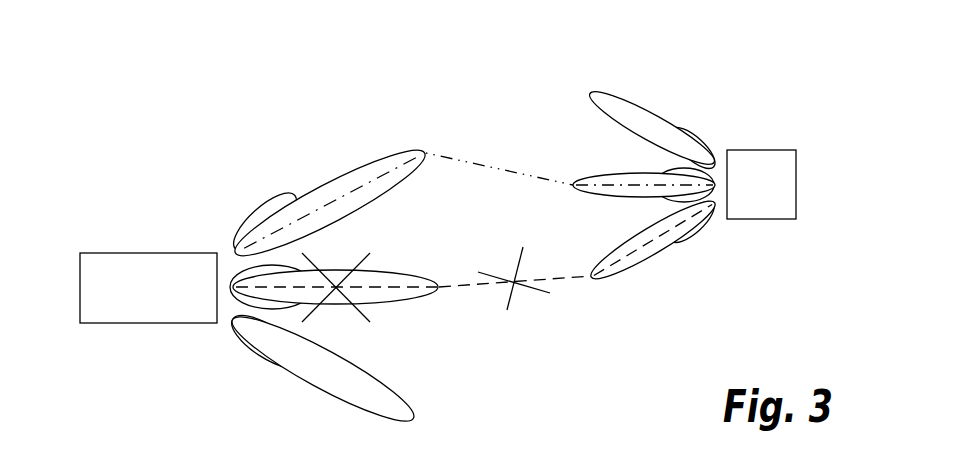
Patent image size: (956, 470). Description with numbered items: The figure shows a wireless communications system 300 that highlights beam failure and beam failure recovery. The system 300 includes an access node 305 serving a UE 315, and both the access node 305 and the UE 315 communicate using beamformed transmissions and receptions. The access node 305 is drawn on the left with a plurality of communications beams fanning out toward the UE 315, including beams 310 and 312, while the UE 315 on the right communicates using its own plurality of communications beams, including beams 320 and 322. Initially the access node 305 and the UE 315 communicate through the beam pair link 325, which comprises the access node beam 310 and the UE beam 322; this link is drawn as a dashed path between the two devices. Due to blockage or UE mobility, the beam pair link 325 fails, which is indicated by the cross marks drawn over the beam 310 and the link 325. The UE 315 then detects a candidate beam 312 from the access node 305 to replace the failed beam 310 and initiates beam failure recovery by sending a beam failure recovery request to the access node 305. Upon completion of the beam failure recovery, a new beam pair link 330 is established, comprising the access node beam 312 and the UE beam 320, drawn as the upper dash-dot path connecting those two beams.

The wireless communications system 300 is at (727, 36).
The access node 305 is at (98, 252).
The beam 310 is at (368, 270).
The candidate beam 312 is at (370, 162).
The UE 315 is at (780, 150).
The beam 320 is at (608, 174).
The beam 322 is at (623, 270).
The beam pair link 325 is at (457, 283).
The beam pair link 330 is at (473, 163).